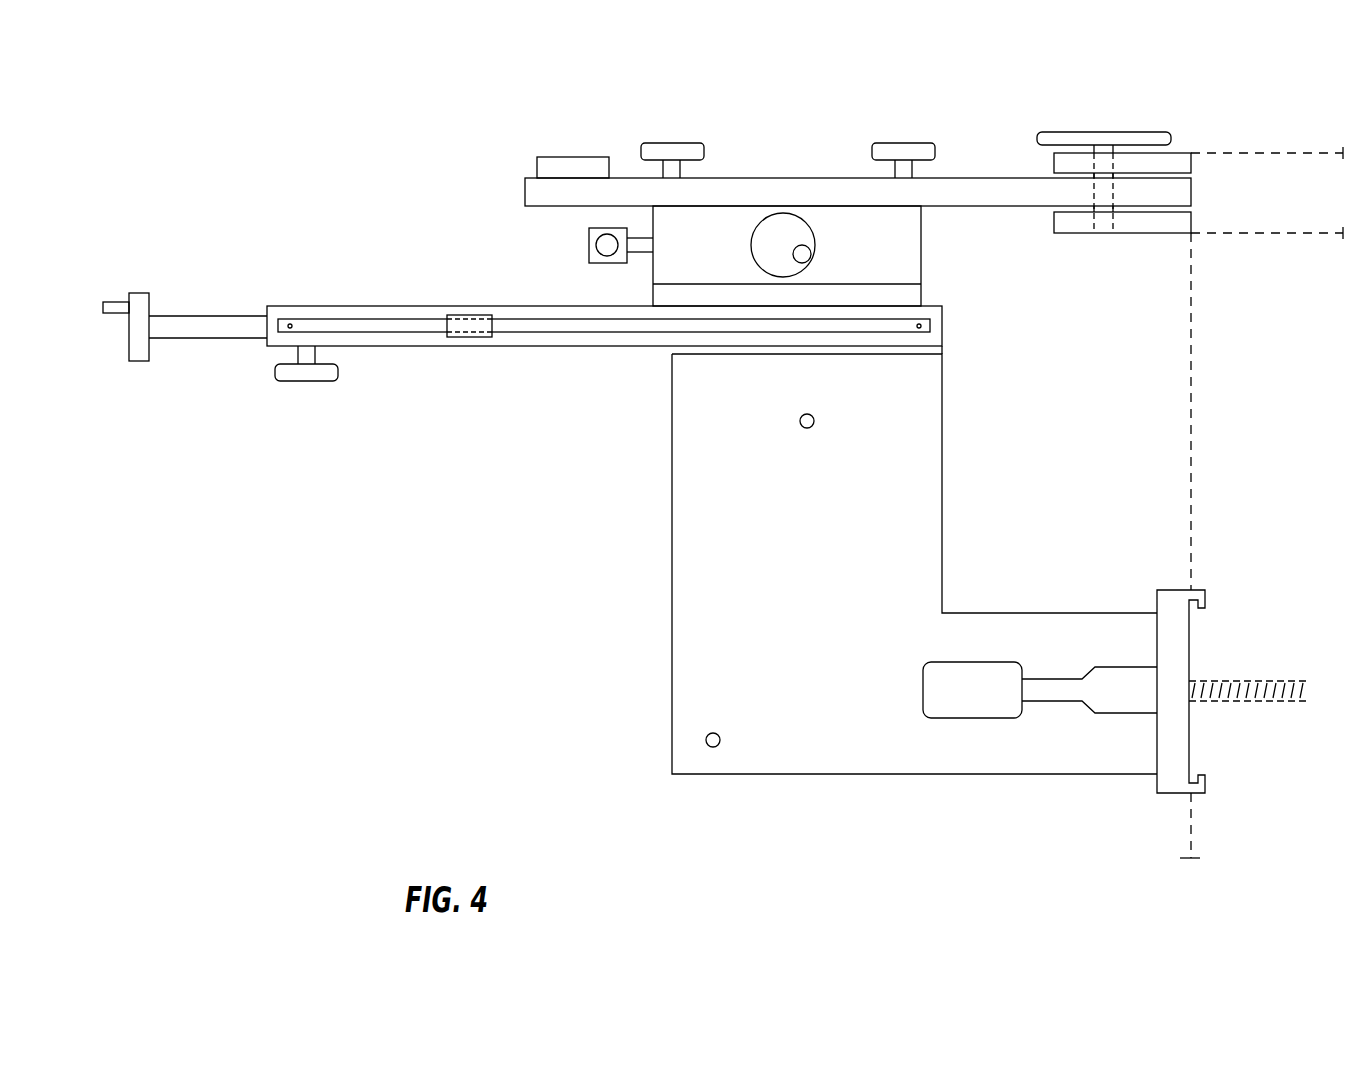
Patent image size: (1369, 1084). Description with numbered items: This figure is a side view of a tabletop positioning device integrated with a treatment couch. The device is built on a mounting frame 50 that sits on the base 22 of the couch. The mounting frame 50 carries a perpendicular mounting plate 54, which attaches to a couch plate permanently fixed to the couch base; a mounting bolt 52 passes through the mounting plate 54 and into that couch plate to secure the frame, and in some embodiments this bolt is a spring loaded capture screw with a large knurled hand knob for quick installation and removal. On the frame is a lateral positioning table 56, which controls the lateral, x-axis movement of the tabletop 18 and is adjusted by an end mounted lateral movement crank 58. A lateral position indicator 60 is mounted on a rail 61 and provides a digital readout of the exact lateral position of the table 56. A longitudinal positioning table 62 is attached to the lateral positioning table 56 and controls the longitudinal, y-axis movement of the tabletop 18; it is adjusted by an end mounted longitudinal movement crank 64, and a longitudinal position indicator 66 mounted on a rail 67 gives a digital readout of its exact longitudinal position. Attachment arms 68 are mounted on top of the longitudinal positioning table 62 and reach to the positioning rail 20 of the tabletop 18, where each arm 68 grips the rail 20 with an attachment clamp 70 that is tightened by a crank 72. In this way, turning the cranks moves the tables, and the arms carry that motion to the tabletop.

The tabletop 18 is at (1326, 205).
The positioning rail 20 is at (1267, 193).
The base 22 is at (1285, 416).
The mounting frame 50 is at (808, 675).
The mounting bolt 52 is at (1027, 713).
The mounting plate 54 is at (1204, 710).
The lateral positioning table 56 is at (604, 360).
The lateral movement crank 58 is at (168, 358).
The lateral position indicator 60 is at (441, 359).
The rail 61 is at (604, 360).
The longitudinal positioning table 62 is at (702, 258).
The longitudinal movement crank 64 is at (787, 258).
The longitudinal position indicator 66 is at (575, 238).
The rail 67 is at (575, 270).
The attachment arm 68 is at (858, 167).
The attachment clamp 70 is at (1100, 246).
The crank 72 is at (1090, 156).